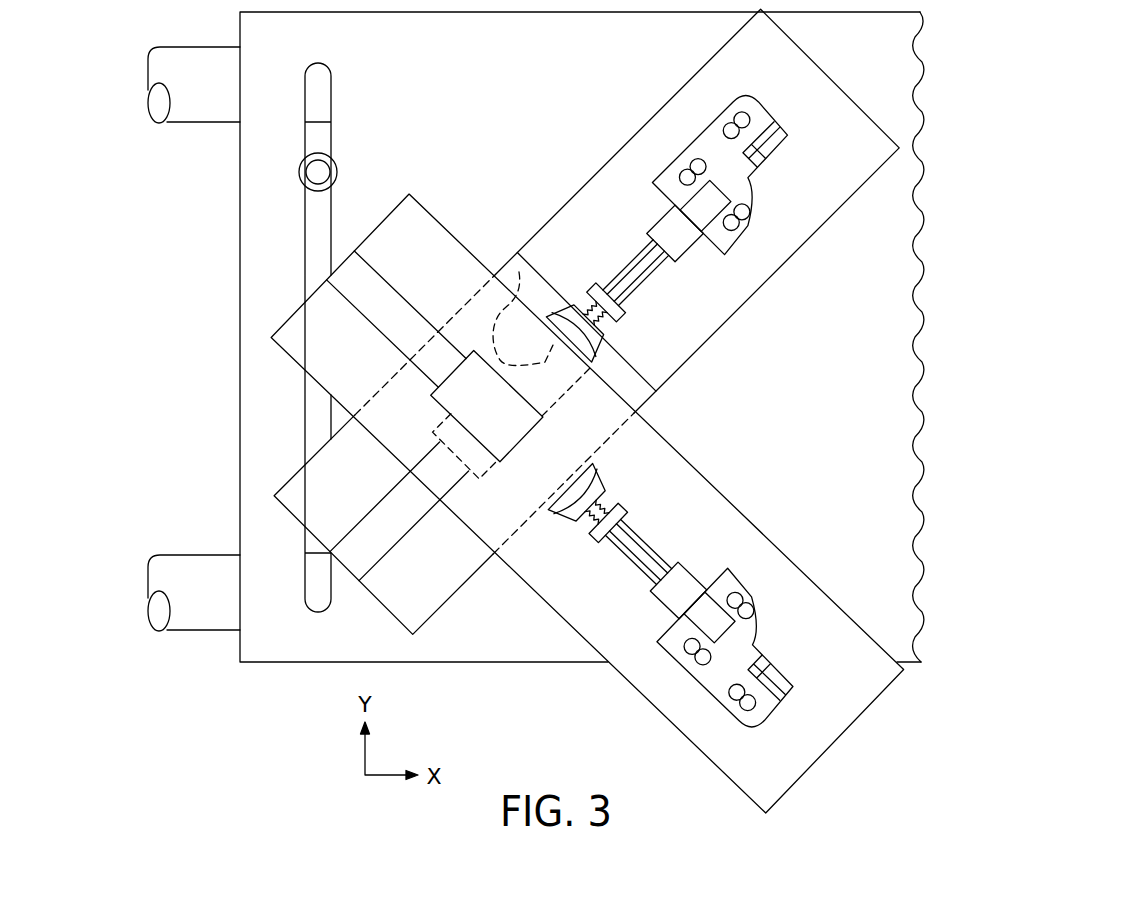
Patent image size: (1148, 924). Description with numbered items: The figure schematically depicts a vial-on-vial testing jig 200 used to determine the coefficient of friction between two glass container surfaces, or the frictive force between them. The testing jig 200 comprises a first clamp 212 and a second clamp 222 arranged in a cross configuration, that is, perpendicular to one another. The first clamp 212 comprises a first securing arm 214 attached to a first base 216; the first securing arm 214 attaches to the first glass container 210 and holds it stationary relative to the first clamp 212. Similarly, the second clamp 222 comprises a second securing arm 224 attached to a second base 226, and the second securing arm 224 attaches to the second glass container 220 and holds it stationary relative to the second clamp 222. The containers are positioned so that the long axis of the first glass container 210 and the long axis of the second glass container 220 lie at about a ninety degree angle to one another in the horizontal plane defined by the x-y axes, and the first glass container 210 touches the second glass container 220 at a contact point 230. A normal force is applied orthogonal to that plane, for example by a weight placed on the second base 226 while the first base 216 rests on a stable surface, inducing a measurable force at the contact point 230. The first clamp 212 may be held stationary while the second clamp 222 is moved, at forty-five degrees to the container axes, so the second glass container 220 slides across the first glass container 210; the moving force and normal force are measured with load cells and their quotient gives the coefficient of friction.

The vial-on-vial testing jig 200 is at (877, 346).
The first glass container 210 is at (519, 272).
The first clamp 212 is at (589, 137).
The first securing arm 214 is at (760, 103).
The first base 216 is at (798, 254).
The second glass container 220 is at (438, 408).
The second clamp 222 is at (590, 503).
The second securing arm 224 is at (755, 601).
The second base 226 is at (834, 601).
The contact point 230 is at (508, 433).